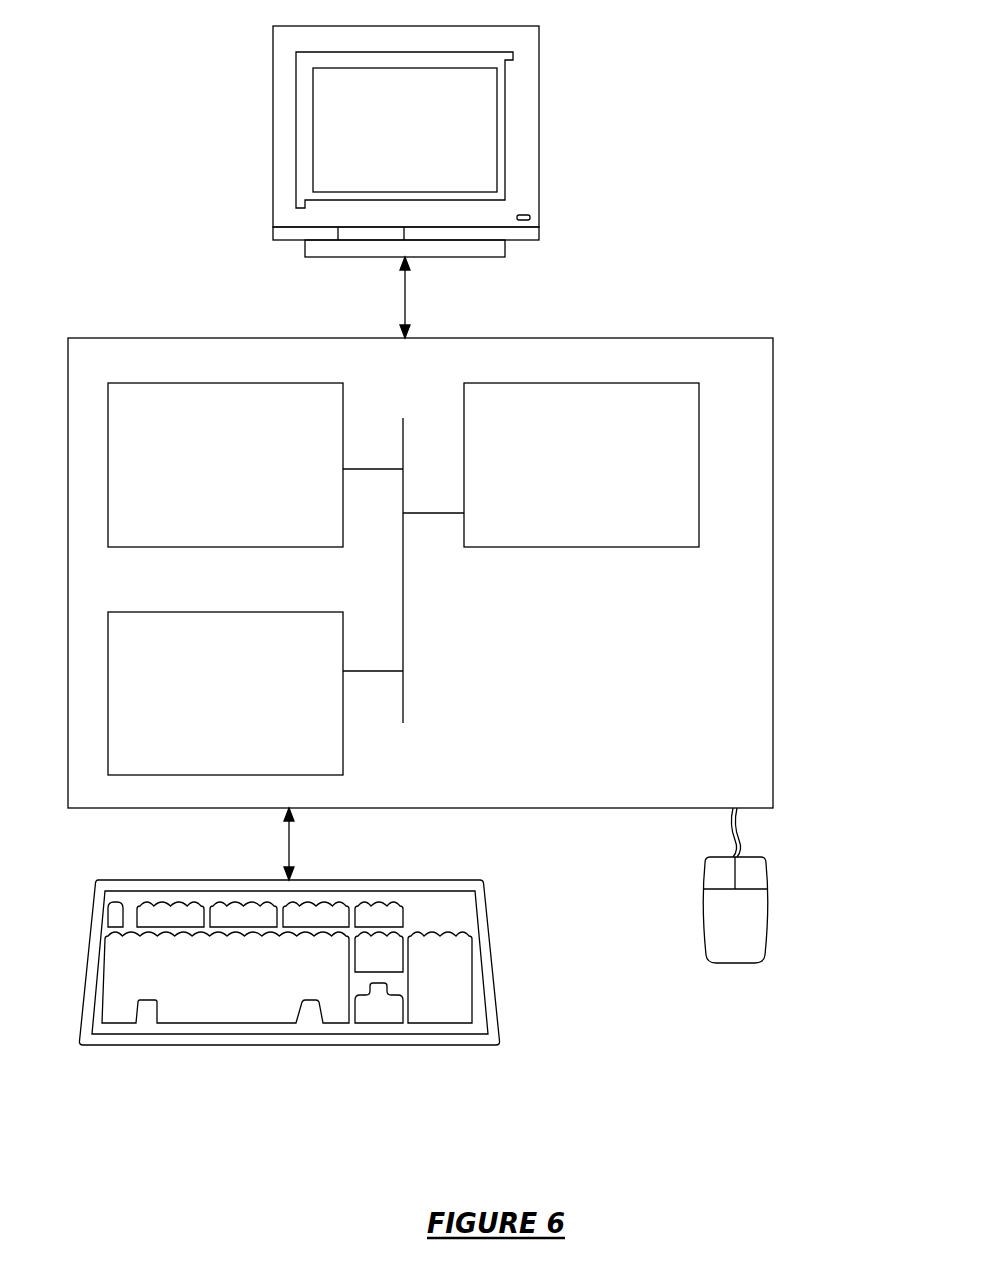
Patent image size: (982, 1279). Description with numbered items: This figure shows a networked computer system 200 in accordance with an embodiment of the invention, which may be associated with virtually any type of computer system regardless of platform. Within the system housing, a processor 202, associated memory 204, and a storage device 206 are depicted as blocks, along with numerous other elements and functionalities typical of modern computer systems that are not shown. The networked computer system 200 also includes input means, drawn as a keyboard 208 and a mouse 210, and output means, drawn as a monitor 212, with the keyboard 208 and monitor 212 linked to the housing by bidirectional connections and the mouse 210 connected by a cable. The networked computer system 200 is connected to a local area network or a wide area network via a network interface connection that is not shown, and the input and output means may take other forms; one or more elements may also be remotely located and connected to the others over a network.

The networked computer system 200 is at (788, 190).
The processor 202 is at (584, 475).
The associated memory 204 is at (205, 477).
The storage device 206 is at (201, 705).
The keyboard 208 is at (195, 1005).
The mouse 210 is at (713, 933).
The monitor 212 is at (381, 146).